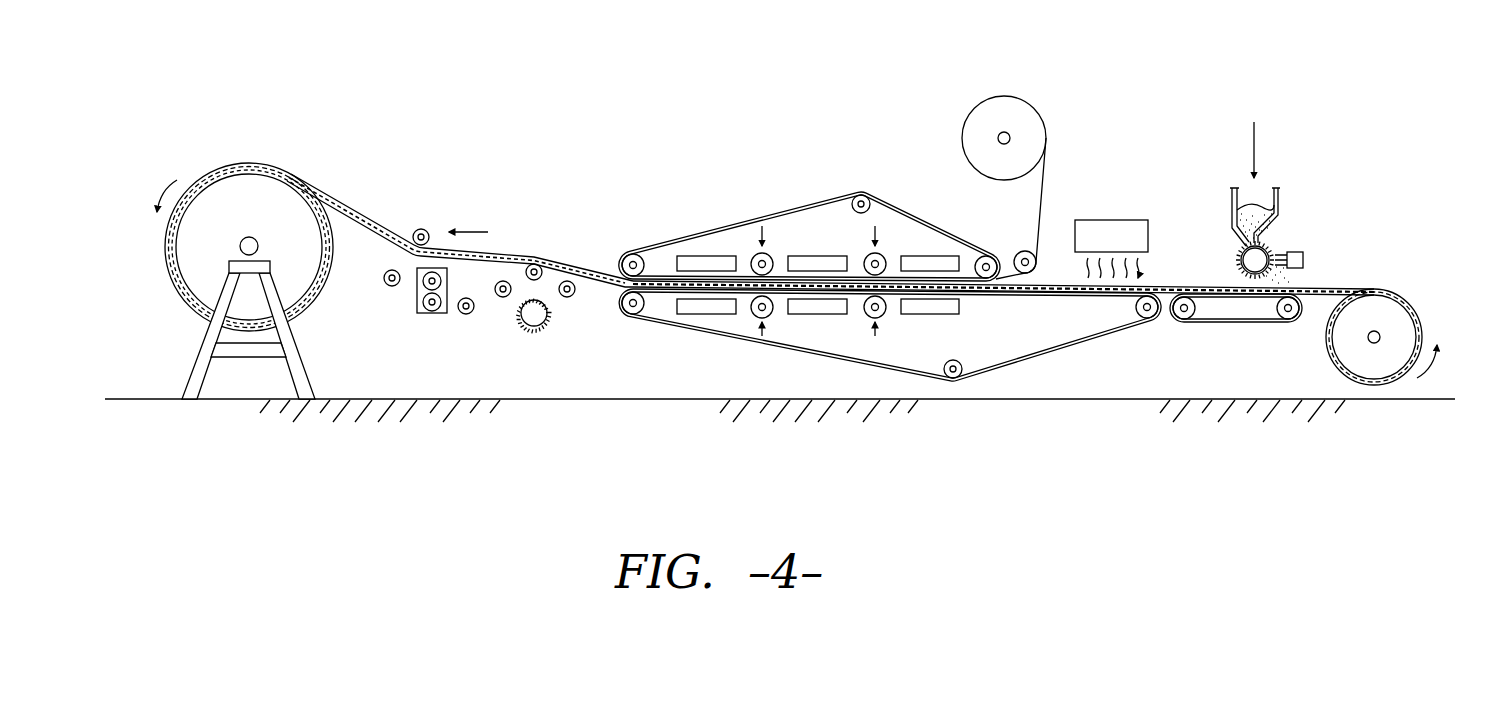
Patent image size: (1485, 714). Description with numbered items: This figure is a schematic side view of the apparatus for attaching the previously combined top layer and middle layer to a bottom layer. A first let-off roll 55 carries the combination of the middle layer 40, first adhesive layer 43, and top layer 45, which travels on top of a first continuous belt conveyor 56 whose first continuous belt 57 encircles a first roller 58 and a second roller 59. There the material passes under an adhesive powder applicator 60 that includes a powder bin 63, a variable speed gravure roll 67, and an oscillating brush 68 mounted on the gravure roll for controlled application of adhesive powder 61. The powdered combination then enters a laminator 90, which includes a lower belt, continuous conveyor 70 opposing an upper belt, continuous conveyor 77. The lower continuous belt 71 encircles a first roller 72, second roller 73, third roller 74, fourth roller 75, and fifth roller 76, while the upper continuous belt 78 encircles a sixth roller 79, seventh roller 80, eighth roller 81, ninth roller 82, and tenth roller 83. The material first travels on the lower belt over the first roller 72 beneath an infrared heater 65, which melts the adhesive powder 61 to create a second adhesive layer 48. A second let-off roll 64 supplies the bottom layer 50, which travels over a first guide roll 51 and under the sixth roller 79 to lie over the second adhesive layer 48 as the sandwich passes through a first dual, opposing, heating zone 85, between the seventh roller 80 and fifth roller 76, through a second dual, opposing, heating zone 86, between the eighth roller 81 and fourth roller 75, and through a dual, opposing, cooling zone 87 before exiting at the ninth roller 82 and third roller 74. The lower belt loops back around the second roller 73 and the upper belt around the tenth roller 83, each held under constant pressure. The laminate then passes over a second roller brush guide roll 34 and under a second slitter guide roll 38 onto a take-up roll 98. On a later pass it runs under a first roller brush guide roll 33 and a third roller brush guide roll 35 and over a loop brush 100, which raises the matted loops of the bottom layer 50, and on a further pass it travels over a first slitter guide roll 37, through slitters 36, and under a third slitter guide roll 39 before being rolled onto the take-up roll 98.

The first roller brush guide roll 33 is at (568, 298).
The second roller brush guide roll 34 is at (536, 263).
The third roller brush guide roll 35 is at (503, 298).
The slitters 36 is at (416, 313).
The first slitter guide roll 37 is at (465, 314).
The second slitter guide roll 38 is at (425, 229).
The third slitter guide roll 39 is at (388, 285).
The middle layer 40 is at (364, 214).
The first adhesive layer 43 is at (375, 231).
The top layer 45 is at (388, 246).
The second adhesive layer 48 is at (333, 198).
The bottom layer 50 is at (320, 190).
The first guide roll 51 is at (1036, 255).
The first let-off roll 55 is at (1402, 332).
The first continuous belt conveyor 56 is at (1241, 326).
The first continuous belt 57 is at (1263, 323).
The first roller 58 is at (1178, 320).
The second roller 59 is at (1291, 320).
The adhesive powder applicator 60 is at (1284, 185).
The adhesive powder 61 is at (1282, 282).
The powder bin 63 is at (1283, 204).
The second let-off roll 64 is at (1010, 106).
The infrared heater 65 is at (1132, 220).
The variable speed gravure roll 67 is at (1277, 247).
The oscillating brush 68 is at (1303, 254).
The lower belt, continuous conveyor 70 is at (1036, 358).
The lower continuous belt 71 is at (1085, 336).
The first roller 72 is at (1145, 320).
The second roller 73 is at (958, 360).
The third roller 74 is at (640, 317).
The fourth roller 75 is at (757, 320).
The fifth roller 76 is at (872, 320).
The upper belt, continuous conveyor 77 is at (760, 208).
The upper continuous belt 78 is at (902, 213).
The sixth roller 79 is at (992, 257).
The seventh roller 80 is at (867, 256).
The eighth roller 81 is at (771, 256).
The ninth roller 82 is at (640, 255).
The tenth roller 83 is at (862, 195).
The first dual, opposing, heating zone 85 is at (928, 255).
The second dual, opposing, heating zone 86 is at (828, 255).
The dual, opposing, cooling zone 87 is at (718, 255).
The laminator 90 is at (905, 115).
The take-up roll 98 is at (333, 110).
The loop brush 100 is at (540, 328).